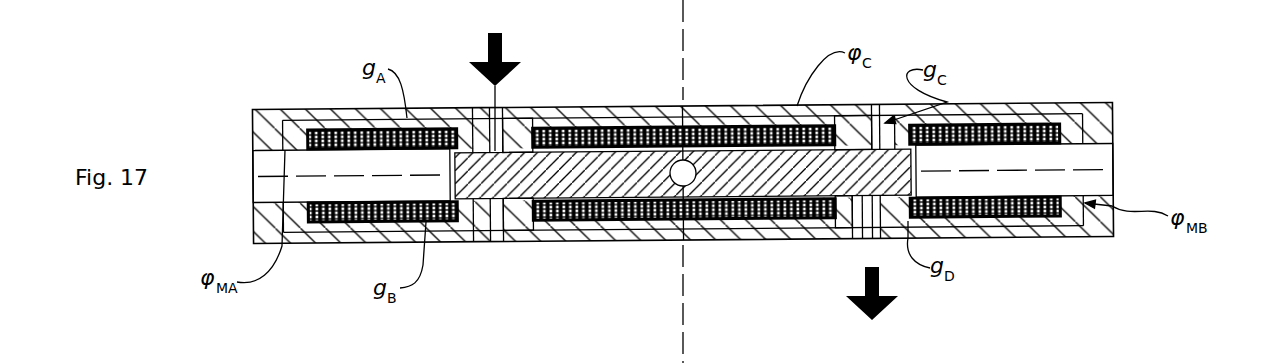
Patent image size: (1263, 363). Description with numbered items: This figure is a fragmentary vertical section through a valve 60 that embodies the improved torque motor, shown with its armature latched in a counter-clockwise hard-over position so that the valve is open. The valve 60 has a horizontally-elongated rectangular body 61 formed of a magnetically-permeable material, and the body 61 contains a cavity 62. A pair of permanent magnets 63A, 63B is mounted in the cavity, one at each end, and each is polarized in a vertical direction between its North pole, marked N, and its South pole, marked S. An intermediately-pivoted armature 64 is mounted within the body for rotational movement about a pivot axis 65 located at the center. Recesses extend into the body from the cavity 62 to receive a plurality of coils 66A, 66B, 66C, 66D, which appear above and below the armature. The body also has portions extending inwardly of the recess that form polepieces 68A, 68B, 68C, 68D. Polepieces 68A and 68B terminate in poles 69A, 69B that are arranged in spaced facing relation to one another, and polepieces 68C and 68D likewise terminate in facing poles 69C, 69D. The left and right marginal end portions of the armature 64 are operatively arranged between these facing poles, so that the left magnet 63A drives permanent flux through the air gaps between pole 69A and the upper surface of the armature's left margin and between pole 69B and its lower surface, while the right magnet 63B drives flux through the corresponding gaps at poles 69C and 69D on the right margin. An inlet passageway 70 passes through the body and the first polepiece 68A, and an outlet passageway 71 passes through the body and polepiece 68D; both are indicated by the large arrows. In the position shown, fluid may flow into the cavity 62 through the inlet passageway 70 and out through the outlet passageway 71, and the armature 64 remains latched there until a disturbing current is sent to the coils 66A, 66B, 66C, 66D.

The valve 60 is at (1118, 85).
The body 61 is at (1112, 238).
The cavity 62 is at (730, 218).
The permanent magnet 63A is at (253, 184).
The permanent magnet 63B is at (1115, 153).
The armature 64 is at (718, 106).
The pivot axis 65 is at (683, 105).
The coil 66A is at (628, 127).
The coil 66B is at (362, 230).
The coil 66C is at (985, 123).
The coil 66D is at (984, 222).
The polepiece 68A is at (458, 127).
The polepiece 68B is at (487, 199).
The polepiece 68C is at (887, 125).
The polepiece 68D is at (852, 221).
The pole 69A is at (523, 152).
The pole 69B is at (570, 221).
The pole 69C is at (862, 107).
The pole 69D is at (803, 243).
The inlet passageway 70 is at (495, 88).
The outlet passageway 71 is at (873, 240).